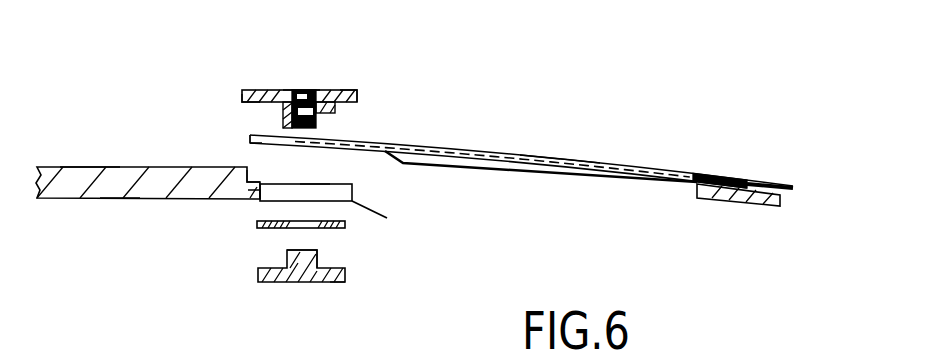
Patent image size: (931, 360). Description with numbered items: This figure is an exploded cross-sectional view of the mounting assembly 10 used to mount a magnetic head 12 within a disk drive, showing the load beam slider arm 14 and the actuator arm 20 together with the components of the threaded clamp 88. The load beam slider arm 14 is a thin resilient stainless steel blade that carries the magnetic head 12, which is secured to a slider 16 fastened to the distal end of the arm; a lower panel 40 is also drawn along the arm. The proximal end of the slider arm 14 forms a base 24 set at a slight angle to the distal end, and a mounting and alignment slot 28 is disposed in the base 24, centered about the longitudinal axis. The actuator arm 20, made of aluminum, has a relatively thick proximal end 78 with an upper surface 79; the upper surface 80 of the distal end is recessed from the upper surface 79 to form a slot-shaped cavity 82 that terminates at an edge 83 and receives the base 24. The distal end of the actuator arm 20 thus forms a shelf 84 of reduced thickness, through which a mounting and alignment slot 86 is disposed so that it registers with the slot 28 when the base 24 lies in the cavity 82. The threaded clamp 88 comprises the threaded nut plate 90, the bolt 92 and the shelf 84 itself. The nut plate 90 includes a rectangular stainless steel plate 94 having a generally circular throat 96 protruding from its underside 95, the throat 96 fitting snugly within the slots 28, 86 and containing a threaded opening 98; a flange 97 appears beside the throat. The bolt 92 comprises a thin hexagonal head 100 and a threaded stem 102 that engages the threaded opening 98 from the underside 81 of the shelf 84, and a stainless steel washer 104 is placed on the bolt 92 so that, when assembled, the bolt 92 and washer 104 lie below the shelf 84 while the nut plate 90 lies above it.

The mounting assembly 10 is at (535, 78).
The magnetic head 12 is at (773, 207).
The load beam slider arm 14 is at (568, 142).
The slider 16 is at (794, 185).
The actuator arm 20 is at (86, 138).
The base 24 is at (340, 139).
The mounting and alignment slot 28 is at (252, 136).
The lower panel 40 is at (563, 175).
The proximal end 78 is at (63, 166).
The upper surface 79 is at (146, 166).
The upper surface 80 is at (271, 183).
The underside 81 is at (118, 198).
The slot-shaped cavity 82 is at (310, 167).
The edge 83 is at (252, 178).
The shelf 84 is at (250, 191).
The mounting and alignment slot 86 is at (387, 218).
The threaded clamp 88 is at (306, 43).
The threaded nut plate 90 is at (371, 78).
The bolt 92 is at (365, 293).
The plate 94 is at (267, 89).
The underside 95 is at (243, 104).
The throat 96 is at (335, 113).
The flange 97 is at (284, 128).
The threaded opening 98 is at (303, 90).
The head 100 is at (346, 274).
The threaded stem 102 is at (318, 256).
The washer 104 is at (253, 229).